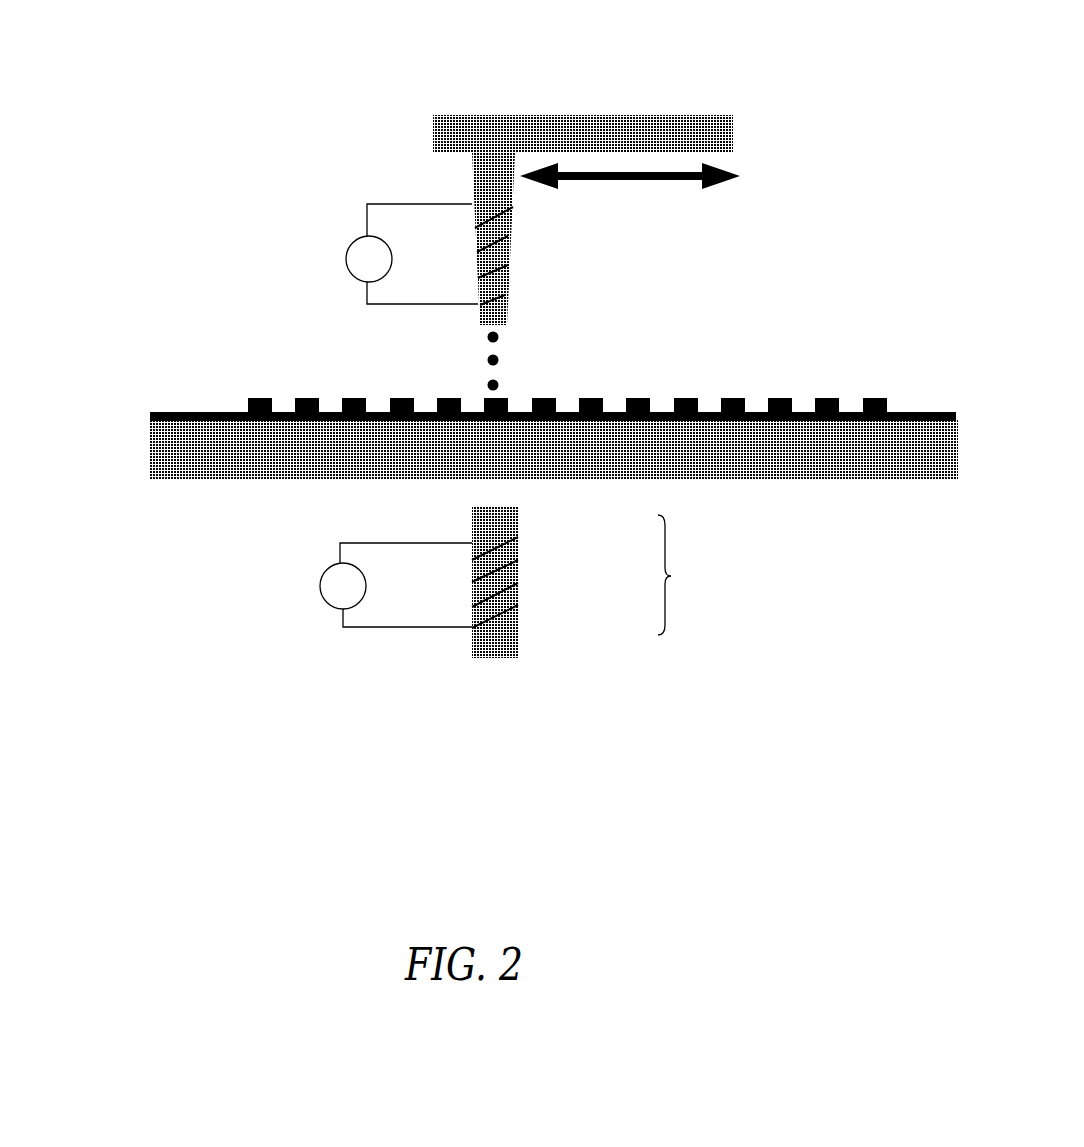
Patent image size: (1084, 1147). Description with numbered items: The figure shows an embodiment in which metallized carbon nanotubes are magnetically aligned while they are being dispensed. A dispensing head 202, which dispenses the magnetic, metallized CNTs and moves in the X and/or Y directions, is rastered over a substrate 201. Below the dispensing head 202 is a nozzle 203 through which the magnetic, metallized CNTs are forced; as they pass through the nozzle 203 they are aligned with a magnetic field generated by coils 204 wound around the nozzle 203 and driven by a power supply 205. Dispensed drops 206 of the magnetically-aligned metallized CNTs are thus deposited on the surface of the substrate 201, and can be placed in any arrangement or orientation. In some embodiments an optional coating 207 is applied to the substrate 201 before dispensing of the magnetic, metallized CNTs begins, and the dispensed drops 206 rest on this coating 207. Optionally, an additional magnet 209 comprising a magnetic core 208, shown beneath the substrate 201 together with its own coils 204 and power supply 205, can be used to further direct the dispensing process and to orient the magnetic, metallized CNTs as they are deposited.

The substrate 201 is at (220, 453).
The dispensing head 202 is at (563, 112).
The nozzle 203 is at (522, 195).
The coils 204 is at (503, 273).
The power supply 205 is at (318, 230).
The dispensed drops 206 is at (298, 392).
The coating 207 is at (155, 408).
The magnetic core 208 is at (502, 659).
The additional magnet 209 is at (711, 575).